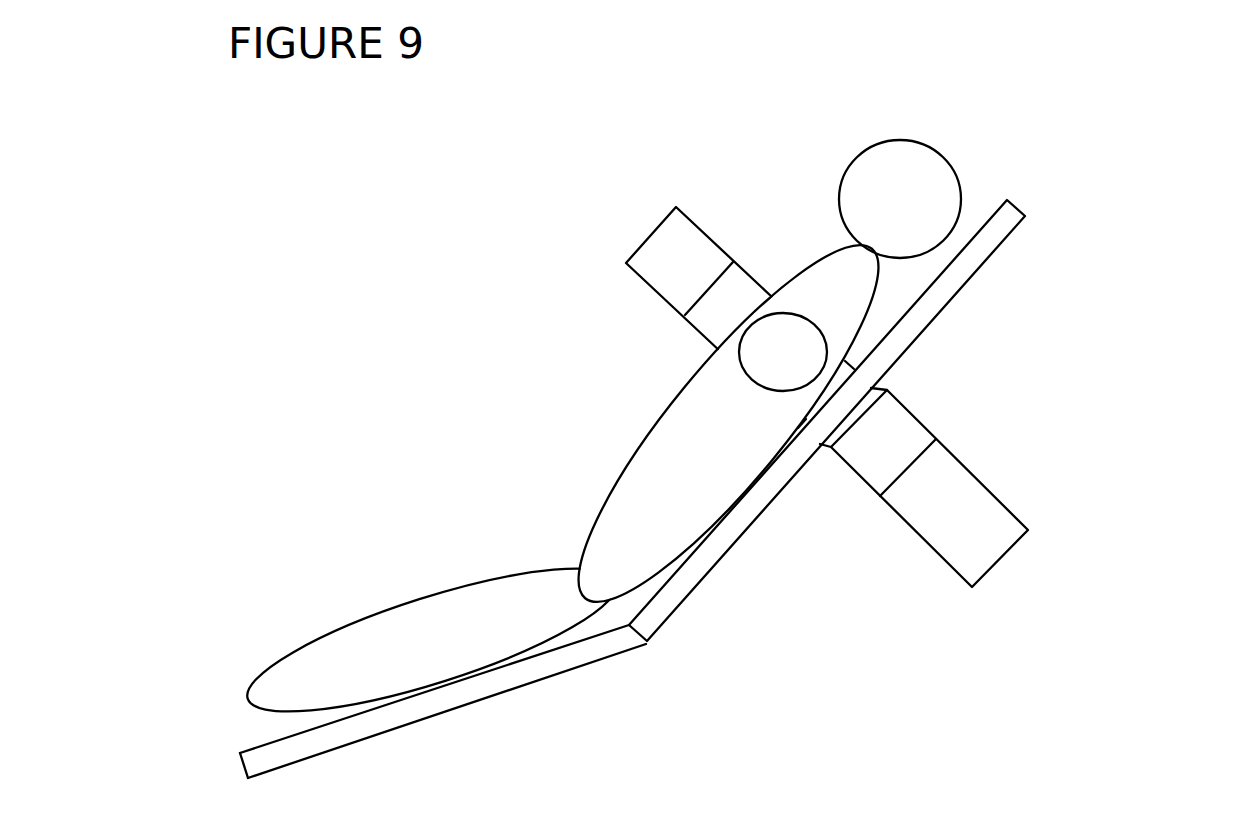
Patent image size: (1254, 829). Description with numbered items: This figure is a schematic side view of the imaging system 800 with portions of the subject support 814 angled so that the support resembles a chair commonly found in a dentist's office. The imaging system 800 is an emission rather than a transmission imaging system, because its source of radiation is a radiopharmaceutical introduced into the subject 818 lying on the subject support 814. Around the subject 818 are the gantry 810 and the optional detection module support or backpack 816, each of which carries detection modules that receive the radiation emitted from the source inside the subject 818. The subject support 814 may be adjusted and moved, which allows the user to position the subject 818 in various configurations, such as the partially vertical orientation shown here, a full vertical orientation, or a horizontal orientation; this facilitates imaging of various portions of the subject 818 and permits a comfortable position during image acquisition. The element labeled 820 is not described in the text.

The imaging system 800 is at (841, 608).
The gantry 810 is at (678, 258).
The subject support 814 is at (1002, 225).
The detection module support 816 is at (918, 428).
The subject 818 is at (677, 430).
The source element 820 is at (797, 352).